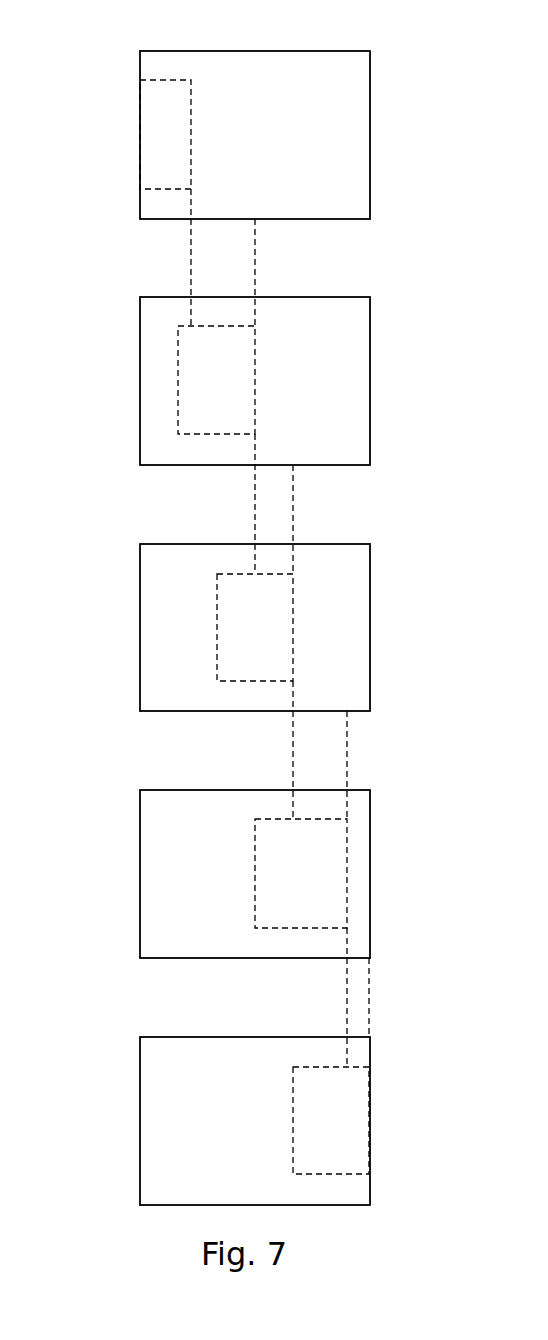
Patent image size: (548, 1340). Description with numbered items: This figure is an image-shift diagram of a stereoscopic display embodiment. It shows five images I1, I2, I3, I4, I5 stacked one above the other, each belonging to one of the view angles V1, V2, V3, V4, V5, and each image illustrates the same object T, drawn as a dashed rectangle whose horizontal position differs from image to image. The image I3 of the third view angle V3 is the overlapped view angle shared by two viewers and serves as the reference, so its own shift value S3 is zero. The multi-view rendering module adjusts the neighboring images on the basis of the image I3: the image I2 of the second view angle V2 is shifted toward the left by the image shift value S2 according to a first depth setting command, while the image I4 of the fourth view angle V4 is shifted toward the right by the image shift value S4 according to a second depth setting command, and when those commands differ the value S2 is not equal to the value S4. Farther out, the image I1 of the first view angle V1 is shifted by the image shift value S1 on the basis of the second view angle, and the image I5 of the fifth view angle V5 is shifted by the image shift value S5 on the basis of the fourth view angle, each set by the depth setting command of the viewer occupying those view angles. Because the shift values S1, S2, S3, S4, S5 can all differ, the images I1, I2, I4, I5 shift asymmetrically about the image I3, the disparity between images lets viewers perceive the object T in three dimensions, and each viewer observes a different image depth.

The first view angle V1 is at (106, 37).
The second view angle V2 is at (106, 284).
The third view angle V3 is at (106, 530).
The fourth view angle V4 is at (106, 777).
The fifth view angle V5 is at (106, 1023).
The image of the first view angle I1 is at (370, 66).
The image of the second view angle I2 is at (370, 312).
The image of the third view angle I3 is at (370, 560).
The image of the fourth view angle I4 is at (370, 806).
The image of the fifth view angle I5 is at (370, 1052).
The object T is at (191, 115).
The image shift value S1 is at (255, 278).
The image shift value S2 is at (293, 518).
The image shift value S3 is at (414, 637).
The image shift value S4 is at (347, 765).
The image shift value S5 is at (313, 1012).